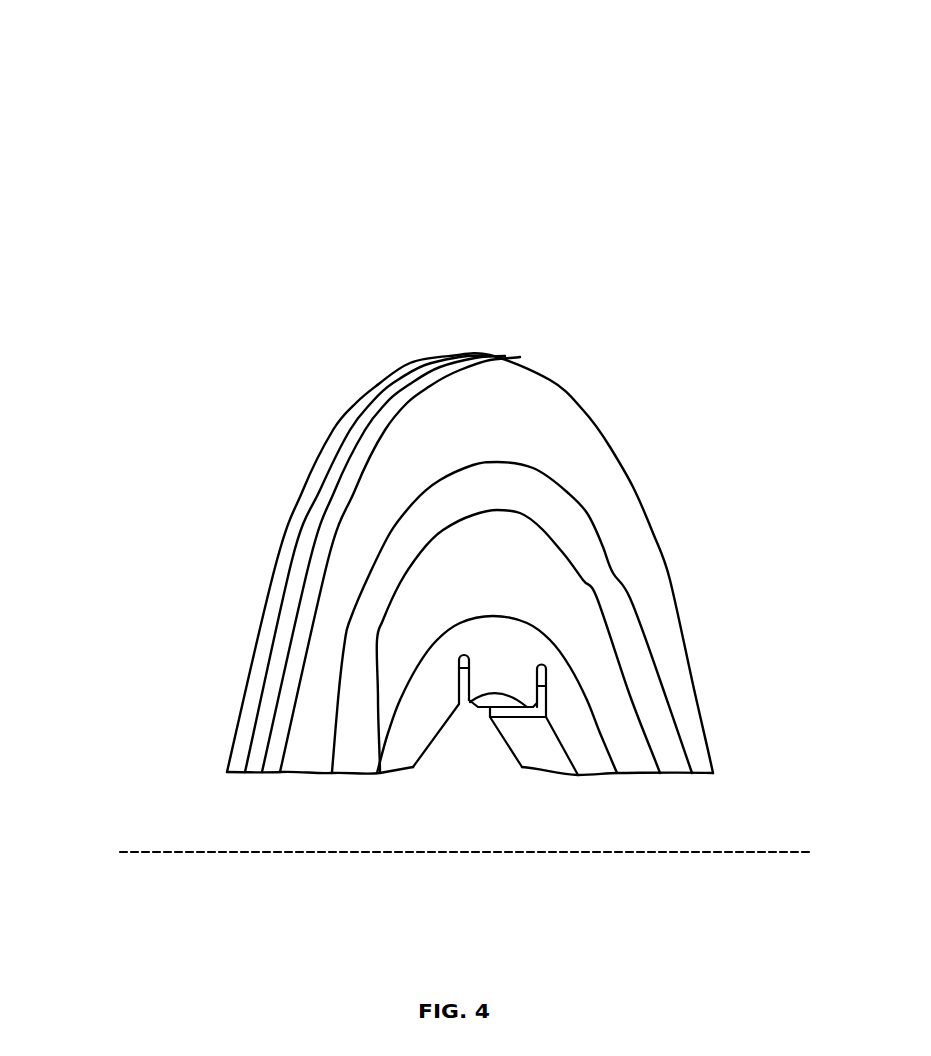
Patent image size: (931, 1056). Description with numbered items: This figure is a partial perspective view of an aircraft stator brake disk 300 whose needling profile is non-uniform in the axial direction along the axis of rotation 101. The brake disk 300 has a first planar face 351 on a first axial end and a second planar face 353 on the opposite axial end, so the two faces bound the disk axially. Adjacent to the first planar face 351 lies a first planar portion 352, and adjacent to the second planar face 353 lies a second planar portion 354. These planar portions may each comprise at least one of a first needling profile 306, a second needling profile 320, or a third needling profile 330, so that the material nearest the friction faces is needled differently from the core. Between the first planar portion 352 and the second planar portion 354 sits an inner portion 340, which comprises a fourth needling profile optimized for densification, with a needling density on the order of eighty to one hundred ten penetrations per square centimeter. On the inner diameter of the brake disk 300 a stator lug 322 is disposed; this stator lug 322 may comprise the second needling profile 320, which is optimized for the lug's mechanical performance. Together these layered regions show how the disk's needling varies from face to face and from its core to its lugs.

The brake disk 300 is at (273, 115).
The inner portion 340 is at (390, 395).
The second planar face 353 is at (335, 406).
The second planar portion 354 is at (336, 446).
The first planar portion 352 is at (333, 527).
The first planar face 351 is at (340, 587).
The third needling profile 330 is at (595, 560).
The first needling profile 306 is at (603, 648).
The second needling profile 320 is at (585, 737).
The stator lug 322 is at (483, 675).
The axis of rotation 101 is at (147, 852).